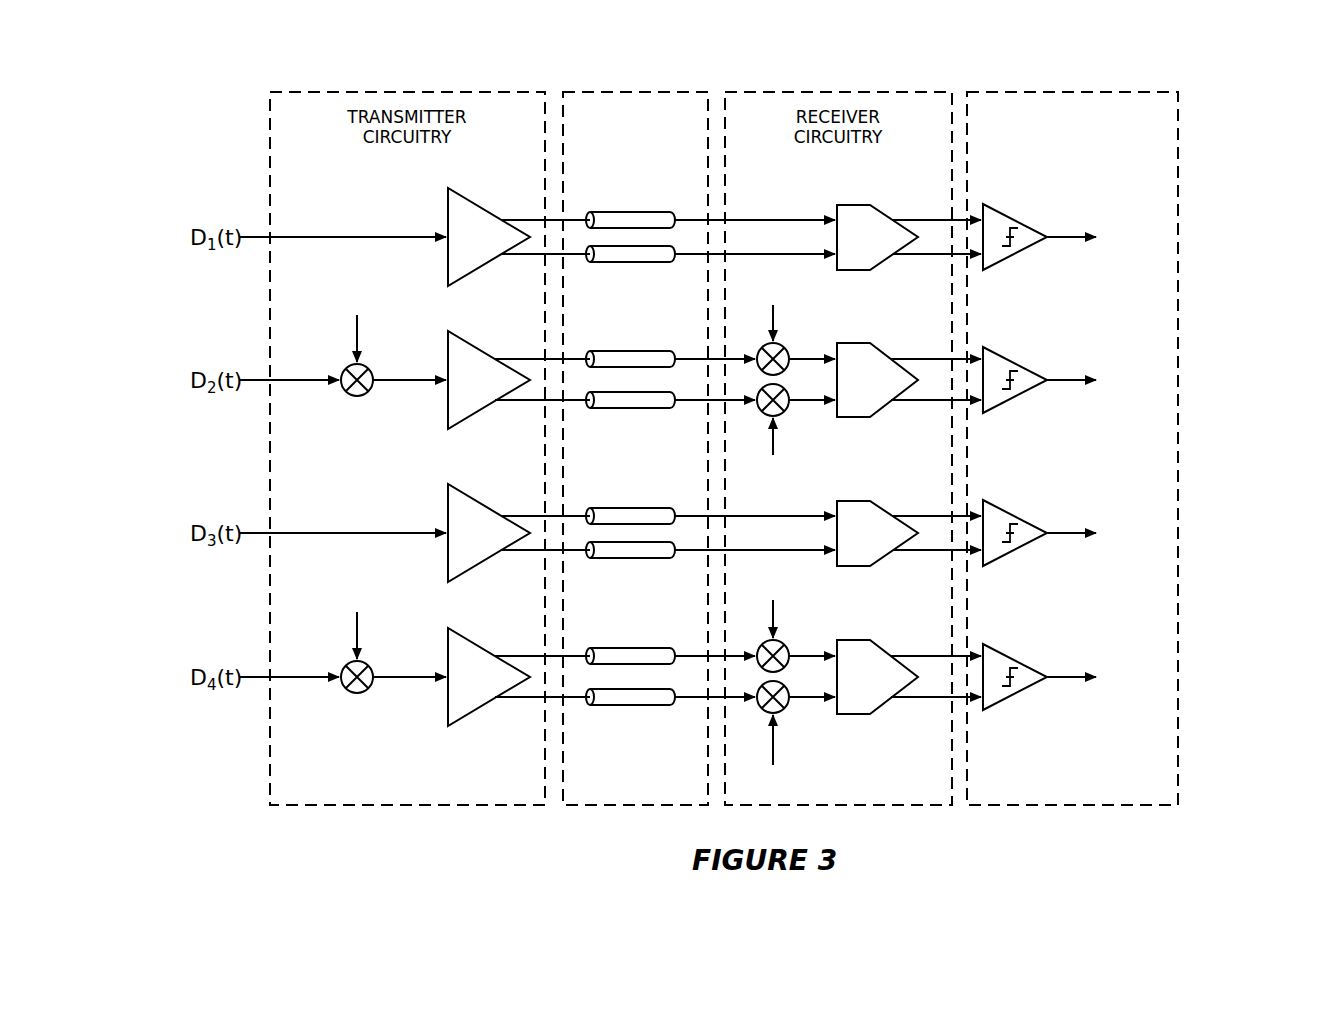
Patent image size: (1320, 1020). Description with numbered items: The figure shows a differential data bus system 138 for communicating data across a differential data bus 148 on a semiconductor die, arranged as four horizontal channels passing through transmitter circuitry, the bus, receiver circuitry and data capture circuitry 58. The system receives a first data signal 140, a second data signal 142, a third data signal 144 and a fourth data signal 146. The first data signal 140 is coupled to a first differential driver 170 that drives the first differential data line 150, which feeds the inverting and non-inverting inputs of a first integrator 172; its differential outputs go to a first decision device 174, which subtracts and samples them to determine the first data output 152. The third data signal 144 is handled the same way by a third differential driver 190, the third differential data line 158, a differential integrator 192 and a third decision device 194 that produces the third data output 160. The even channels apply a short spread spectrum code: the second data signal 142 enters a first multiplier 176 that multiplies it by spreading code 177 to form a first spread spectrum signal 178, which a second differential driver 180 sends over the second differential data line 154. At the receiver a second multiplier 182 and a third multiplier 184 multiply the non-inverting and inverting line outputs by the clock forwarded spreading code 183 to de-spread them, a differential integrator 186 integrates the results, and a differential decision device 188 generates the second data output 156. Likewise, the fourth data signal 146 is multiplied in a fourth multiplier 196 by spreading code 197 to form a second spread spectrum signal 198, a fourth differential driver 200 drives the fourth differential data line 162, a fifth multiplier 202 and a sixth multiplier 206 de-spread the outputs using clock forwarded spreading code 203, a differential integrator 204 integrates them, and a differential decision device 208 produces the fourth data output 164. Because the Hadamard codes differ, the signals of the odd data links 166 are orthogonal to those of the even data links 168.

The differential data bus system 138 is at (236, 113).
The differential data bus 148 is at (635, 448).
The data capture circuitry 58 is at (1072, 448).
The first data signal 140 is at (440, 236).
The second data signal 142 is at (287, 379).
The third data signal 144 is at (440, 532).
The fourth data signal 146 is at (287, 676).
The first differential driver 170 is at (470, 203).
The second differential driver 180 is at (470, 346).
The third differential driver 190 is at (470, 499).
The fourth differential driver 200 is at (470, 643).
The first multiplier 176 is at (356, 397).
The spreading code S2(t) 177 is at (357, 333).
The first spread spectrum signal 178 is at (386, 379).
The fourth multiplier 196 is at (356, 694).
The spreading code S4(t) 197 is at (357, 630).
The second spread spectrum signal 198 is at (386, 676).
The first differential data line 150 is at (657, 246).
The second differential data line 154 is at (657, 392).
The third differential data line 158 is at (657, 542).
The fourth differential data line 162 is at (657, 689).
The second multiplier 182 is at (784, 343).
The third multiplier 184 is at (783, 415).
The clock forwarded spreading code S2'(t) 183 is at (773, 320).
The fifth multiplier 202 is at (784, 640).
The sixth multiplier 206 is at (783, 712).
The clock forwarded spreading code S4'(t) 203 is at (773, 618).
The first integrator 172 is at (885, 215).
The differential integrator 186 is at (885, 355).
The differential integrator 192 is at (888, 513).
The differential integrator 204 is at (885, 650).
The first decision device 174 is at (1016, 216).
The differential decision device 188 is at (1016, 359).
The third decision device 194 is at (1016, 512).
The differential decision device 208 is at (1016, 656).
The first data output 152 is at (1065, 236).
The second data output 156 is at (1065, 379).
The third data output 160 is at (1065, 532).
The fourth data output 164 is at (1065, 676).
The odd data links 166 is at (1190, 242).
The even data links 168 is at (1190, 385).